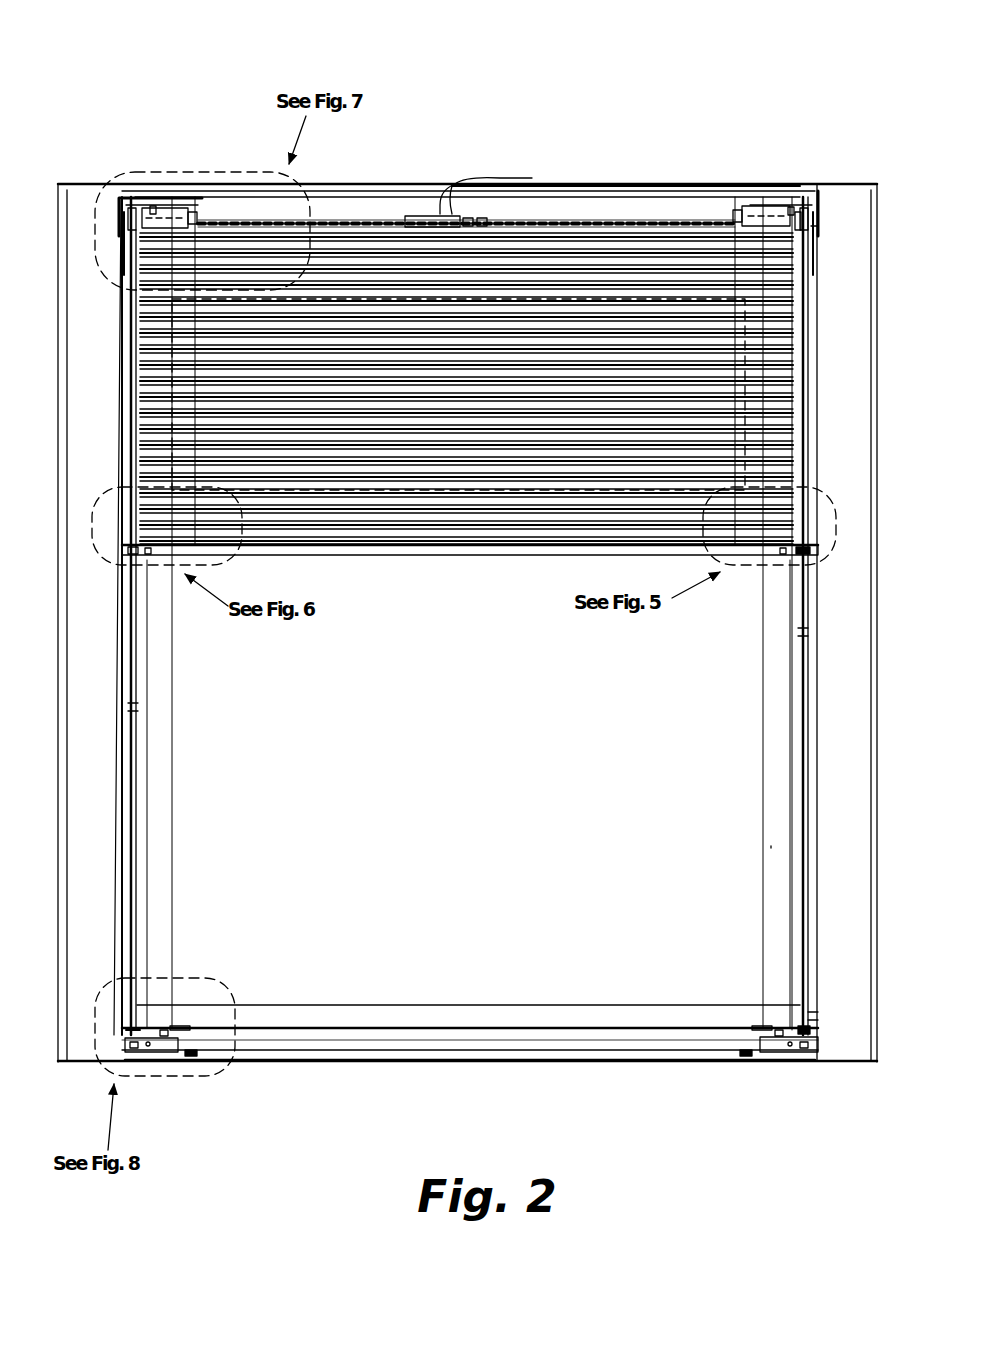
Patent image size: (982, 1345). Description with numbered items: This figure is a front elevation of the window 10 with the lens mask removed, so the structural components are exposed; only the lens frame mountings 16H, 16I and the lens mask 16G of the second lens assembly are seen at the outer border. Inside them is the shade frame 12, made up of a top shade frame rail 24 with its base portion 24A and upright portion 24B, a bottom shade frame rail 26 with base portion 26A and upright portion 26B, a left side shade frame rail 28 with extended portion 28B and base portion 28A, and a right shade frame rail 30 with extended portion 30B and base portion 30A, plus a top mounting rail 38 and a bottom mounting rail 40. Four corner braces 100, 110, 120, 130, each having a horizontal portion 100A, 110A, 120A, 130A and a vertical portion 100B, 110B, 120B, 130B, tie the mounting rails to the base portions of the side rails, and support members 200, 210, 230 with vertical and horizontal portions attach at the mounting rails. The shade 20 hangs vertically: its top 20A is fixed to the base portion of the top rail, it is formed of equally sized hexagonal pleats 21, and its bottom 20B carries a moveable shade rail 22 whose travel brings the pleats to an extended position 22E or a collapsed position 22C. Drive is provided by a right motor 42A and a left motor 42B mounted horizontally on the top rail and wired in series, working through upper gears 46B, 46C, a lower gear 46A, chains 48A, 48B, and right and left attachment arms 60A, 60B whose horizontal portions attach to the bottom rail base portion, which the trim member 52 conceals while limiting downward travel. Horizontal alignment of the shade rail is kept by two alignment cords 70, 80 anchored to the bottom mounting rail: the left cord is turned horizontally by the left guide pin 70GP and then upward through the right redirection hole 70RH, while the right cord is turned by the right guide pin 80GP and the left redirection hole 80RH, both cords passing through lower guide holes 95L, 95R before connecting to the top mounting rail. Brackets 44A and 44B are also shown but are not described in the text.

The window 10 is at (716, 116).
The shade frame 12 is at (828, 922).
The lens frame mounting 16I is at (56, 204).
The lens frame mounting 16H is at (873, 204).
The lens mask 16G is at (772, 830).
The shade 20 is at (448, 385).
The top of the shade 20A is at (556, 233).
The bottom of the shade 20B is at (533, 514).
The hexagonal shaped pleats 21 is at (780, 338).
The shade rail 22 is at (563, 557).
The collapsed position 22C is at (800, 492).
The extended position 22E is at (800, 416).
The top shade frame rail 24 is at (618, 191).
The base portion of the top shade frame rail 24A is at (440, 188).
The upright portion of the top shade frame rail 24B is at (543, 219).
The bottom shade frame rail 26 is at (635, 1042).
The base portion of the bottom shade frame rail 26A is at (405, 1027).
The upright portion of the bottom shade frame rail 26B is at (538, 1049).
The left side shade frame rail 28 is at (96, 866).
The base portion of the left shade frame rail 28A is at (123, 927).
The extended portion of the left shade frame rail 28B is at (76, 827).
The right shade frame rail 30 is at (150, 198).
The base portion of the right shade frame rail 30A is at (818, 824).
The extended portion of the right shade frame rail 30B is at (826, 757).
The top mounting rail 38 is at (545, 192).
The bottom mounting rail 40 is at (322, 1062).
The right motor 42A is at (756, 210).
The left motor 42B is at (166, 210).
The left bracket 44A is at (132, 206).
The right bracket 44B is at (810, 242).
The lower gear 46A is at (803, 1030).
The upper gear 46B is at (808, 212).
The upper gear 46C is at (141, 200).
The chain 48A is at (803, 632).
The left chain 48B is at (135, 732).
The trim member 52 is at (522, 1027).
The right attachment arm 60A is at (780, 1027).
The left attachment arm 60B is at (166, 1030).
The left alignment cord 70 is at (735, 404).
The left guide pin 70GP is at (150, 572).
The right redirection hole 70RH is at (735, 558).
The right alignment cord 80 is at (197, 404).
The right guide pin 80GP is at (776, 556).
The left redirection hole 80RH is at (205, 558).
The lower guide hole 95L is at (163, 1032).
The lower guide hole 95R is at (779, 1038).
The corner brace 100 is at (818, 1030).
The horizontal portion of corner brace 100A is at (800, 1054).
The vertical portion of corner brace 100B is at (820, 1016).
The corner brace 110 is at (820, 206).
The horizontal portion of corner brace 110A is at (802, 212).
The vertical portion of corner brace 110B is at (818, 228).
The corner brace 120 is at (118, 255).
The horizontal portion of corner brace 120A is at (154, 206).
The vertical portion of corner brace 120B is at (119, 288).
The corner brace 130 is at (121, 1050).
The horizontal portion of corner brace 130A is at (138, 1054).
The vertical portion of corner brace 130B is at (130, 1000).
The support member 200 is at (766, 1072).
The support member 210 is at (790, 206).
The support member 230 is at (170, 1052).